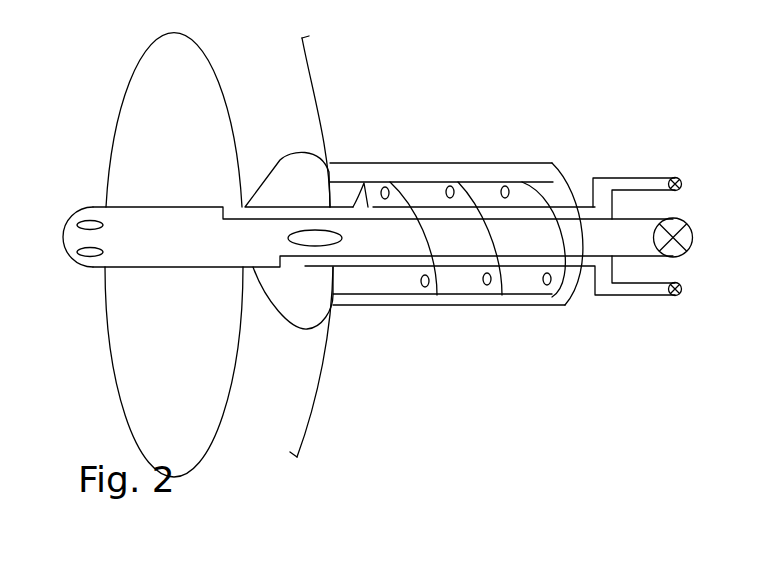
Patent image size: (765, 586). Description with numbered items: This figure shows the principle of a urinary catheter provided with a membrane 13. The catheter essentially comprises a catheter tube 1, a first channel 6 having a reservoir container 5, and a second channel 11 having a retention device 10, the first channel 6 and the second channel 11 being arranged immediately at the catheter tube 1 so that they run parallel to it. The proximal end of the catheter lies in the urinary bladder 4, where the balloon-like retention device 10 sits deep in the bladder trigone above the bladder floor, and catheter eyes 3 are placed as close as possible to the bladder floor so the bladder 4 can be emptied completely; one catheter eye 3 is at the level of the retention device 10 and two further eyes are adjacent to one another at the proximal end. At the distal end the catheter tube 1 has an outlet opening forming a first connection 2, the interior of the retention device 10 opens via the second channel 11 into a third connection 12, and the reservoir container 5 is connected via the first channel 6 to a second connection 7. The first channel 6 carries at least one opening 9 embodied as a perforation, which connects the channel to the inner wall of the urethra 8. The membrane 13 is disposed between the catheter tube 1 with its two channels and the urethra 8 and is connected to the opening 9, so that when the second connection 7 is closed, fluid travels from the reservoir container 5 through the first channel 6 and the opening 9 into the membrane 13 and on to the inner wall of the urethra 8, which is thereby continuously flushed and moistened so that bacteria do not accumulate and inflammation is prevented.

The catheter tube 1 is at (603, 233).
The first connection 2 is at (660, 242).
The catheter eye 3 is at (88, 223).
The urinary bladder 4 is at (288, 123).
The reservoir container 5 is at (186, 124).
The first channel 6 is at (520, 212).
The second connection 7 is at (675, 177).
The urethra 8 is at (390, 181).
The opening 9 is at (362, 182).
The retention device 10 is at (313, 202).
The second channel 11 is at (458, 260).
The third connection 12 is at (675, 297).
The membrane 13 is at (437, 192).